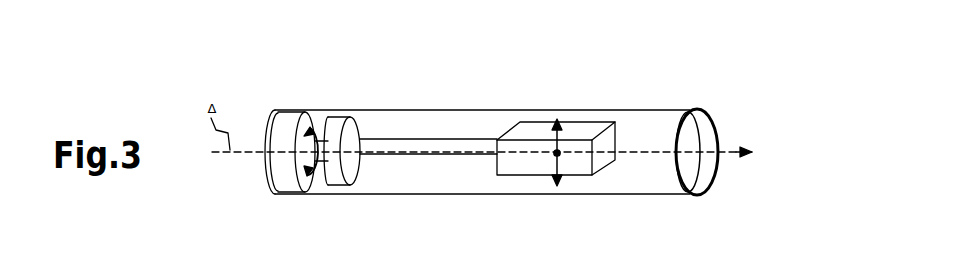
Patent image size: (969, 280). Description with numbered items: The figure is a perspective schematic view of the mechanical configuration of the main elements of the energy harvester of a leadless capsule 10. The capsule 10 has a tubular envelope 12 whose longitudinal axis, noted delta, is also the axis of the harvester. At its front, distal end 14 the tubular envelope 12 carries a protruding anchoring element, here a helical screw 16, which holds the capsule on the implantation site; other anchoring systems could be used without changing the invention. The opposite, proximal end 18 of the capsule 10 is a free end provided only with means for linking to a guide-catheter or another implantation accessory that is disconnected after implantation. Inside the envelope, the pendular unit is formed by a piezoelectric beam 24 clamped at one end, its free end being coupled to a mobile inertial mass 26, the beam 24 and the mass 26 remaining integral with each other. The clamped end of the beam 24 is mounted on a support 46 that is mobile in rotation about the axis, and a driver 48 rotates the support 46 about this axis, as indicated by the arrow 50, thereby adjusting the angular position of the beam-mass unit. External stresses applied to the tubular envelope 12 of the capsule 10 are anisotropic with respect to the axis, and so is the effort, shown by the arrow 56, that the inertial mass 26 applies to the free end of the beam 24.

The capsule 10 is at (640, 78).
The tubular envelope 12 is at (573, 196).
The front end 14 is at (647, 182).
The helical screw 16 is at (716, 130).
The proximal end 18 is at (324, 110).
The piezoelectric beam 24 is at (430, 143).
The mobile inertial mass 26 is at (526, 165).
The support 46 is at (338, 180).
The driver 48 is at (290, 186).
The arrow 50 is at (306, 130).
The arrow 56 is at (552, 138).